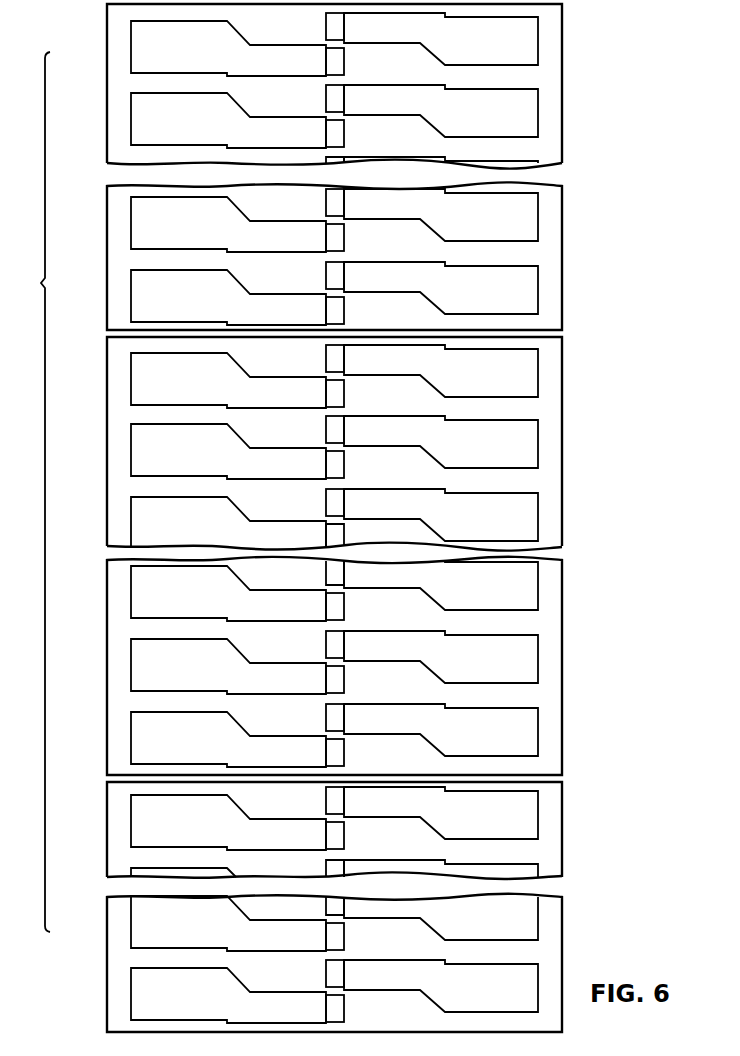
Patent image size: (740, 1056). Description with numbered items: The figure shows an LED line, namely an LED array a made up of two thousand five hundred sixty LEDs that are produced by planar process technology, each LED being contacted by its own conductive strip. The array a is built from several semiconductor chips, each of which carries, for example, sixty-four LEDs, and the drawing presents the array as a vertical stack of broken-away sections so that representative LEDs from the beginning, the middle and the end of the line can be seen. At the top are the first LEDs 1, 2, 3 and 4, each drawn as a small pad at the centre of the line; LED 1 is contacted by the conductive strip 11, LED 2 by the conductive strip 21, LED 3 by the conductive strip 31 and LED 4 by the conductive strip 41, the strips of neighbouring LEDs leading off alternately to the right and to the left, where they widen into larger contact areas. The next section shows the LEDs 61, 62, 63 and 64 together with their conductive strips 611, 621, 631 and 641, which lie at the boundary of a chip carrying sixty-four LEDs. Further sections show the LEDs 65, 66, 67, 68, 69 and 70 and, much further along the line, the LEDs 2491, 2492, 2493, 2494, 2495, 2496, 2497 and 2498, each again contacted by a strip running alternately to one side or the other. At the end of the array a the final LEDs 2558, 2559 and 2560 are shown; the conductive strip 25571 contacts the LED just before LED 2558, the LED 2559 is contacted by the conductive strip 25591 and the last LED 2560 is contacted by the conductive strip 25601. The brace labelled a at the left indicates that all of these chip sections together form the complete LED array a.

The LED 1 is at (338, 27).
The LED 2 is at (326, 62).
The conductive strip 11 is at (466, 41).
The conductive strip 21 is at (142, 50).
The LED 3 is at (338, 99).
The LED 4 is at (326, 134).
The conductive strip 31 is at (466, 113).
The conductive strip 41 is at (142, 122).
The LED 61 is at (338, 203).
The LED 62 is at (326, 238).
The conductive strip 611 is at (453, 217).
The conductive strip 621 is at (142, 226).
The LED 63 is at (338, 276).
The LED 64 is at (326, 311).
The conductive strip 631 is at (453, 290).
The conductive strip 641 is at (142, 299).
The LED 65 is at (338, 359).
The LED 66 is at (326, 394).
The LED 67 is at (338, 430).
The LED 68 is at (326, 465).
The LED 69 is at (338, 503).
The LED 70 is at (326, 538).
The LED 2491 is at (338, 572).
The LED 2492 is at (326, 607).
The LED 2493 is at (338, 645).
The LED 2494 is at (326, 680).
The LED 2495 is at (338, 718).
The LED 2496 is at (326, 753).
The LED 2497 is at (338, 801).
The LED 2498 is at (326, 836).
The LED 2558 is at (326, 937).
The conductive strip 25571 is at (445, 916).
The LED 2559 is at (338, 974).
The LED 2560 is at (326, 1009).
The conductive strip 25591 is at (445, 988).
The conductive strip 25601 is at (142, 997).
The LED array a is at (37, 492).